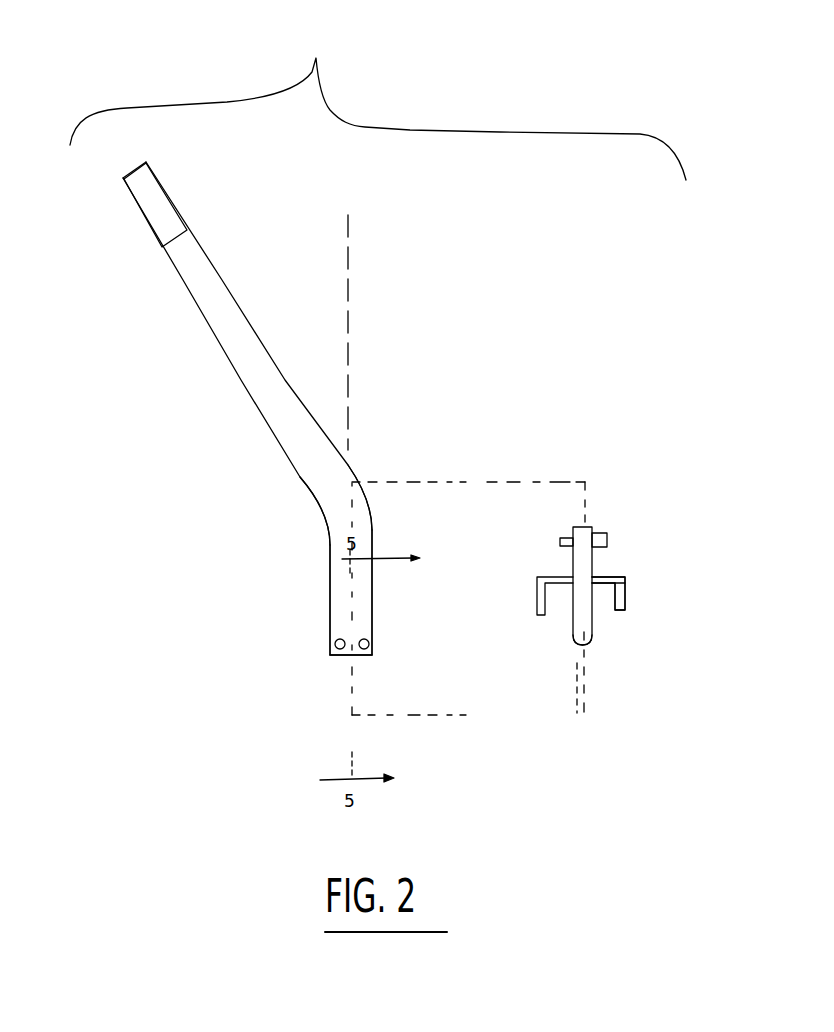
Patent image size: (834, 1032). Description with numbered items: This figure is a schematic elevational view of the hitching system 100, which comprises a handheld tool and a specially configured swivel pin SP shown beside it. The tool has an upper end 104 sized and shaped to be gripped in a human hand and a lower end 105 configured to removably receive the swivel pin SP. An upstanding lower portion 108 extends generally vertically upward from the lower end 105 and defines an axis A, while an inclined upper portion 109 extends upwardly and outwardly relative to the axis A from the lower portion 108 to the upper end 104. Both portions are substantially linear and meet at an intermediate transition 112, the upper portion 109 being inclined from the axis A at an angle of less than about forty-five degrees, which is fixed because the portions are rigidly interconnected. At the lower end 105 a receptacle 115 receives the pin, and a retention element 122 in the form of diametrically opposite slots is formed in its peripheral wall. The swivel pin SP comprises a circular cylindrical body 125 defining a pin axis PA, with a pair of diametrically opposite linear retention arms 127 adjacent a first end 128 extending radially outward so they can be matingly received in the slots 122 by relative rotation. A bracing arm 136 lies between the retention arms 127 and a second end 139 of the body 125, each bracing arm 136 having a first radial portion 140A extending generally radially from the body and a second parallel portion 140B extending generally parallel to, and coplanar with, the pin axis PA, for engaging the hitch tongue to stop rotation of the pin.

The system 100 is at (378, 102).
The upper end 104 is at (128, 194).
The upper portion 109 is at (238, 370).
The intermediate transition 112 is at (314, 511).
The lower portion 108 is at (328, 593).
The lower end 105 is at (326, 641).
The receptacle 115 is at (340, 661).
The retention element 122 is at (365, 636).
The circular cylindrical body 125 is at (571, 624).
The first end 128 is at (588, 526).
The retention arms 127 is at (605, 534).
The bracing arm 136 is at (627, 588).
The second end 139 is at (581, 648).
The first radial portion 140A is at (613, 577).
The second parallel portion 140B is at (627, 600).
The axis A is at (355, 265).
The swivel pin SP is at (626, 551).
The pin axis PA is at (577, 683).